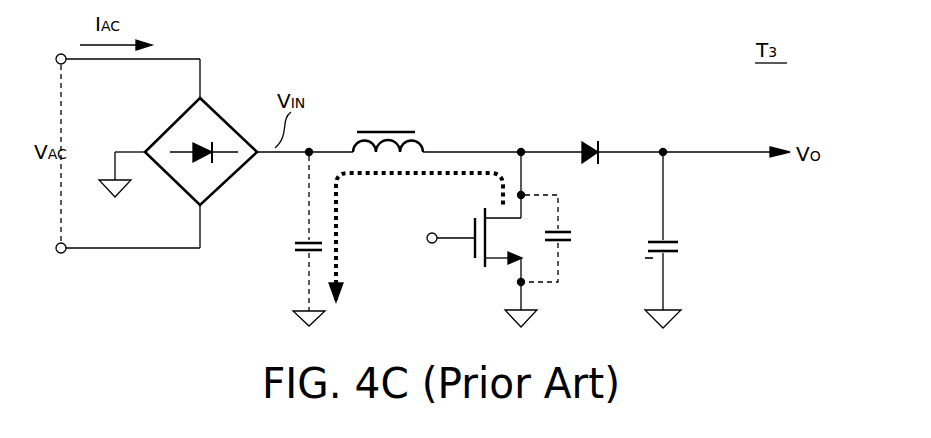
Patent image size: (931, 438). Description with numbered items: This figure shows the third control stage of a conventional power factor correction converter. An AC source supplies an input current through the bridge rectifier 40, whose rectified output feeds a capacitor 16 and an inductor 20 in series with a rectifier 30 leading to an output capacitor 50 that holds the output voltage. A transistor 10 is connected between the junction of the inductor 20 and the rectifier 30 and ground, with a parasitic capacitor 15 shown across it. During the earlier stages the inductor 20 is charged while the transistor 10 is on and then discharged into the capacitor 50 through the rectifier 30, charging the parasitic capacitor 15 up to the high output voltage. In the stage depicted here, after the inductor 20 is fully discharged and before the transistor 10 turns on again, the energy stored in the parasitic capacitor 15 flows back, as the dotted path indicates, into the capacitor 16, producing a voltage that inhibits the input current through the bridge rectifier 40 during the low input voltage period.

The transistor 10 is at (476, 268).
The parasitic capacitor 15 is at (575, 240).
The capacitor 16 is at (290, 250).
The inductor 20 is at (382, 125).
The rectifier 30 is at (588, 140).
The bridge rectifier 40 is at (226, 190).
The capacitor 50 is at (681, 246).